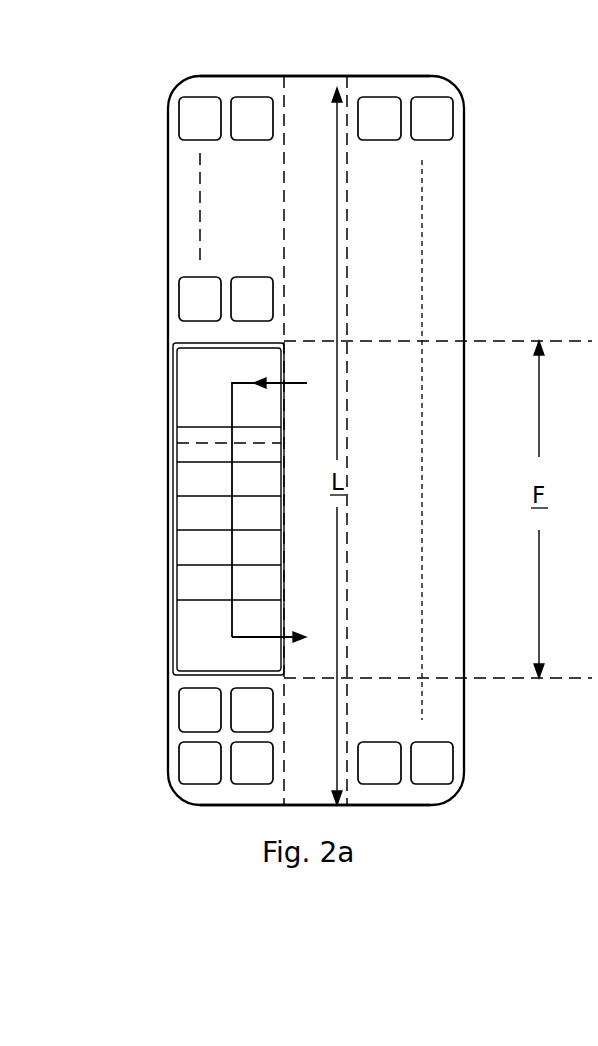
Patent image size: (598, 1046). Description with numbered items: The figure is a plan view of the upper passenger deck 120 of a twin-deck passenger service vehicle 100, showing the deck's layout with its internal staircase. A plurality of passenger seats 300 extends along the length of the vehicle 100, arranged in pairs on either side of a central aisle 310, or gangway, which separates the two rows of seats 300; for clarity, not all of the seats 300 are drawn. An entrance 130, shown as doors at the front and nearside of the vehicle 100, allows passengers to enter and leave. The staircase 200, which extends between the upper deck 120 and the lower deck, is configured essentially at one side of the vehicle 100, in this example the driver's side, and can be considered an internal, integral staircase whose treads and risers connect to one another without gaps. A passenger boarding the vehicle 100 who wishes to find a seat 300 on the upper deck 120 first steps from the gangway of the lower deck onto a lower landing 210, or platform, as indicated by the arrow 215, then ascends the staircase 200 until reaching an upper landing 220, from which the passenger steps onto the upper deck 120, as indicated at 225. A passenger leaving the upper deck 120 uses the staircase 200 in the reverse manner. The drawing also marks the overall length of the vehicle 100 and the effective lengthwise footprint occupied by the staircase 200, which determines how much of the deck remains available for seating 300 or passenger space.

The passenger service vehicle 100 is at (464, 255).
The aisle 310 is at (310, 95).
The entrance 130 is at (464, 735).
The upper passenger deck 120 is at (405, 400).
The passenger seats 300 is at (253, 127).
The staircase 200 is at (190, 512).
The lower landing 210 is at (198, 393).
The arrow 215 is at (239, 379).
The upper landing 220 is at (190, 613).
The arrow 225 is at (248, 638).